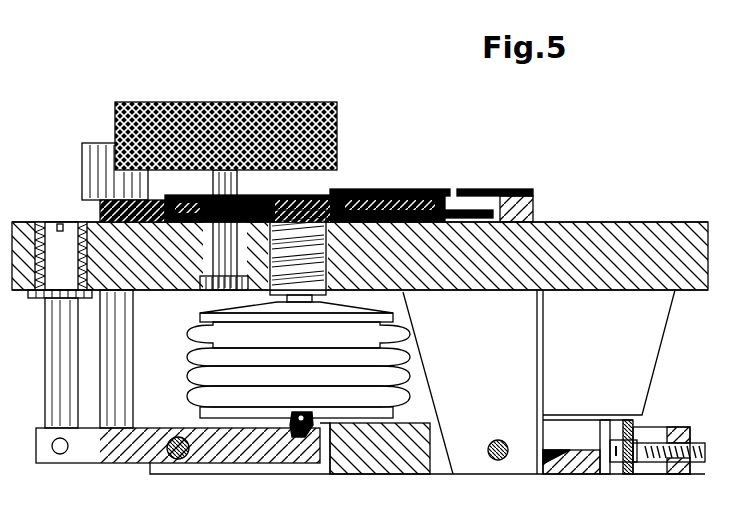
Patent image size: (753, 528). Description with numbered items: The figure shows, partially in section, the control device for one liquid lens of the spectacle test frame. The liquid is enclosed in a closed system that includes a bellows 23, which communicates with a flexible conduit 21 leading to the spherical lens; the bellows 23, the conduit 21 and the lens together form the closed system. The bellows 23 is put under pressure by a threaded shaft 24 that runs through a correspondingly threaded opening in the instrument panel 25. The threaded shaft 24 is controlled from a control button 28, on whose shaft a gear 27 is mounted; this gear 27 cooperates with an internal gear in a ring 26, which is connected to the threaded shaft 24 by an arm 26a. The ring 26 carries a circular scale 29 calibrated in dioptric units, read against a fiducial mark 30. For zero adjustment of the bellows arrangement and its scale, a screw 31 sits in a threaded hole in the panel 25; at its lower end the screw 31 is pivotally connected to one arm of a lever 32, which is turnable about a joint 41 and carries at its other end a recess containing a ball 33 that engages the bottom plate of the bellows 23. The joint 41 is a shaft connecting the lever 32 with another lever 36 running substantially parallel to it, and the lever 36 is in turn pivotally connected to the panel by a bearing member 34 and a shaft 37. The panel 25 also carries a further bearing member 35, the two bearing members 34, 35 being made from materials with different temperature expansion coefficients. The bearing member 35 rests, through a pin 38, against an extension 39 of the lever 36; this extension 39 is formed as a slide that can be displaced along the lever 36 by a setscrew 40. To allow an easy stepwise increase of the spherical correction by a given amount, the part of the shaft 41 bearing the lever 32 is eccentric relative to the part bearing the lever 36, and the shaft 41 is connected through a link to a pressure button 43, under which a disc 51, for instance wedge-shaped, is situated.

The flexible conduit 21 is at (327, 425).
The bellows 23 is at (190, 400).
The threaded shaft 24 is at (292, 262).
The instrument panel 25 is at (597, 230).
The ring 26 is at (428, 190).
The arm 26a is at (363, 194).
The gear 27 is at (257, 192).
The control button 28 is at (178, 102).
The circular scale 29 is at (445, 193).
The fiducial mark 30 is at (470, 193).
The screw 31 is at (42, 222).
The lever 32 is at (80, 450).
The ball 33 is at (297, 428).
The bearing member 34 is at (473, 445).
The bearing member 35 is at (641, 352).
The lever 36 is at (400, 460).
The shaft 37 is at (498, 462).
The pin 38 is at (550, 474).
The extension 39 is at (603, 474).
The setscrew 40 is at (700, 440).
The joint 41 is at (172, 458).
The pressure button 43 is at (86, 152).
The disc 51 is at (100, 214).